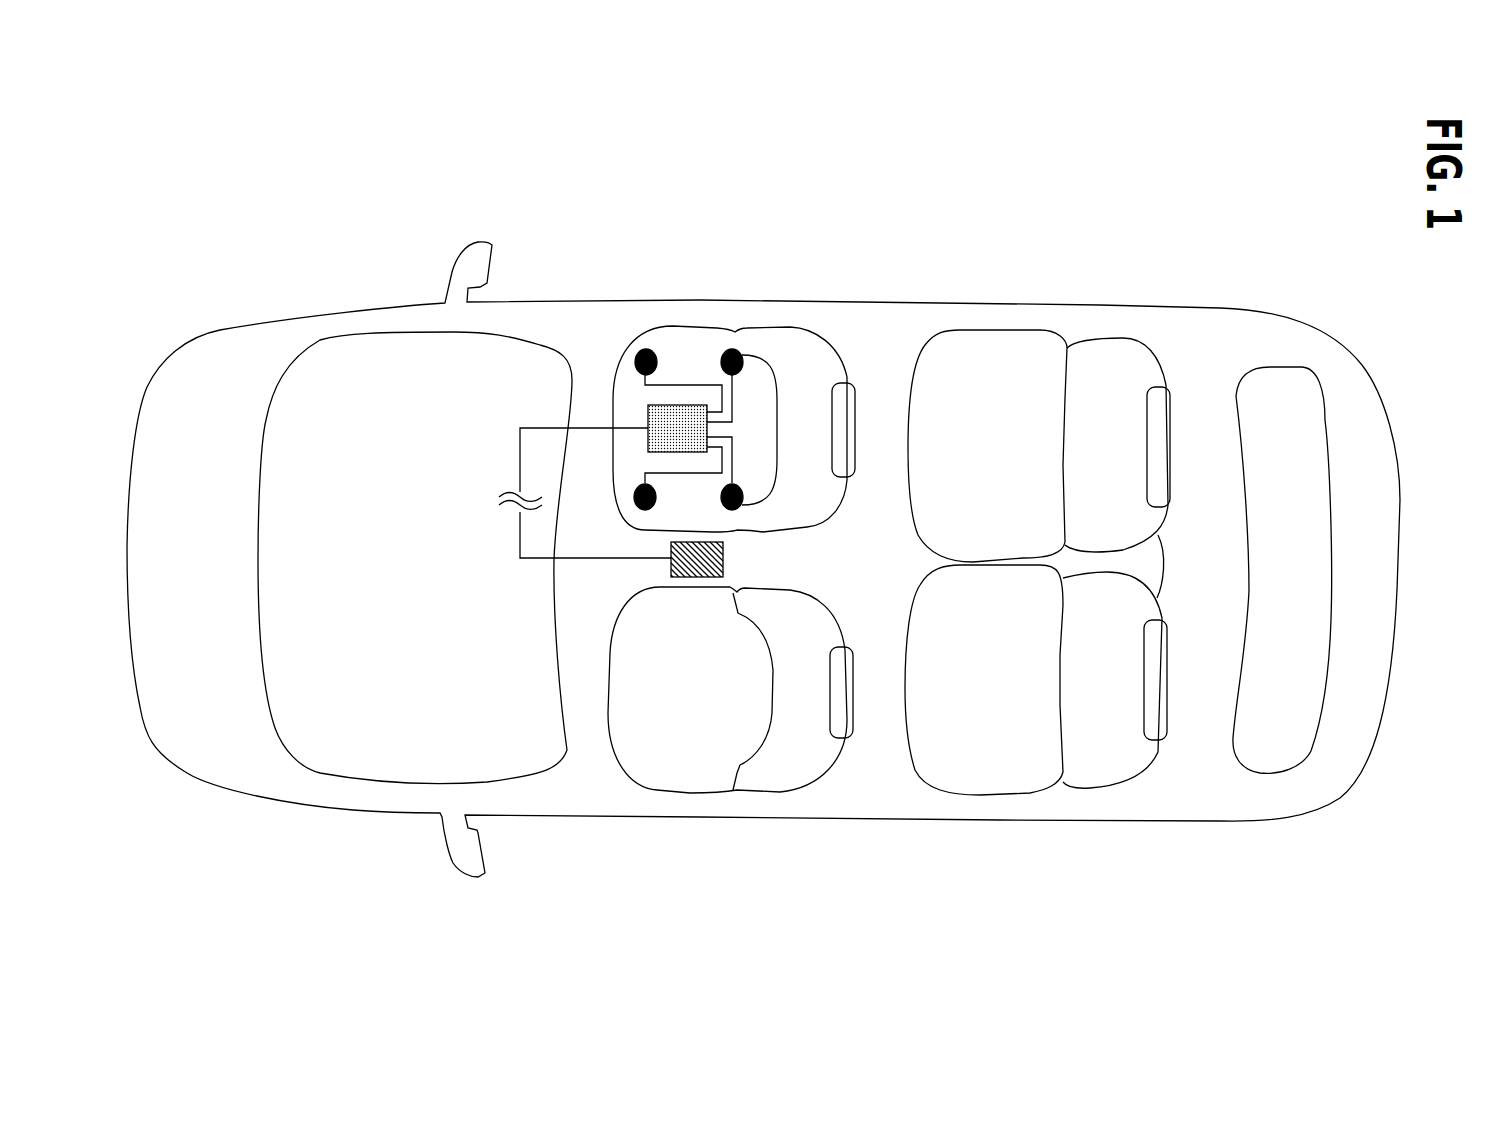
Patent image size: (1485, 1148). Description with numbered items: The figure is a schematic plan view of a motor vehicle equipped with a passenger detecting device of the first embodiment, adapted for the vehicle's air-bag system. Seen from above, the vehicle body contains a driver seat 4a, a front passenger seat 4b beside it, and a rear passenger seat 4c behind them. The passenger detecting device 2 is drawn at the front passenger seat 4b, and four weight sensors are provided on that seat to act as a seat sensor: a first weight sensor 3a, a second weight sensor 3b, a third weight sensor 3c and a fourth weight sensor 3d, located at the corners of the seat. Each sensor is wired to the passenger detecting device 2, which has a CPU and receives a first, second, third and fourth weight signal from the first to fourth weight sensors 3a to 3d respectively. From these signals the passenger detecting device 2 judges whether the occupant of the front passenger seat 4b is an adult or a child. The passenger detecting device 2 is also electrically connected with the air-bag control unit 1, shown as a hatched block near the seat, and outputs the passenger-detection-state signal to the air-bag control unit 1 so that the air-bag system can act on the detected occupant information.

The air-bag control unit 1 is at (697, 579).
The passenger detecting device 2 is at (646, 413).
The first weight sensor 3a is at (645, 511).
The second weight sensor 3b is at (647, 341).
The third weight sensor 3c is at (731, 511).
The fourth weight sensor 3d is at (730, 341).
The driver seat 4a is at (825, 778).
The front passenger seat 4b is at (823, 337).
The rear passenger seat 4c is at (1157, 537).